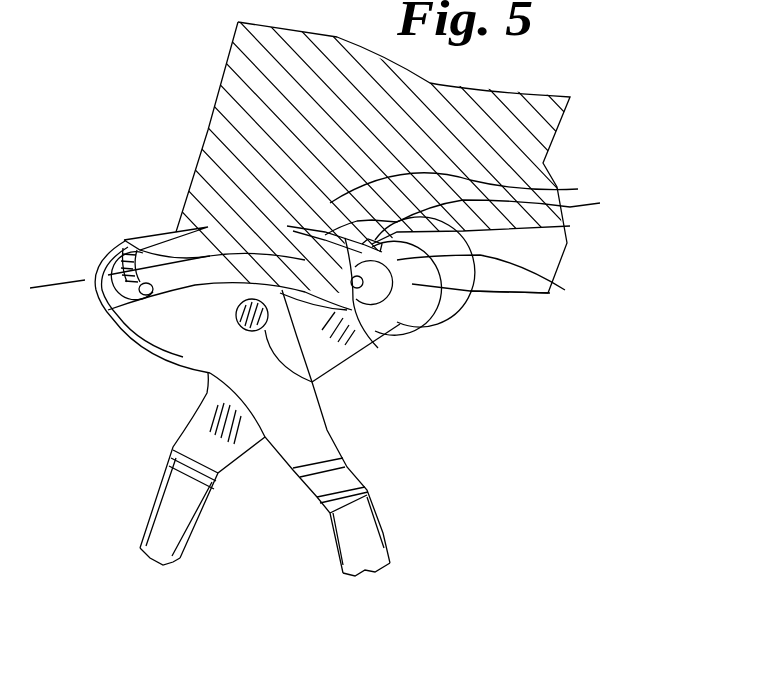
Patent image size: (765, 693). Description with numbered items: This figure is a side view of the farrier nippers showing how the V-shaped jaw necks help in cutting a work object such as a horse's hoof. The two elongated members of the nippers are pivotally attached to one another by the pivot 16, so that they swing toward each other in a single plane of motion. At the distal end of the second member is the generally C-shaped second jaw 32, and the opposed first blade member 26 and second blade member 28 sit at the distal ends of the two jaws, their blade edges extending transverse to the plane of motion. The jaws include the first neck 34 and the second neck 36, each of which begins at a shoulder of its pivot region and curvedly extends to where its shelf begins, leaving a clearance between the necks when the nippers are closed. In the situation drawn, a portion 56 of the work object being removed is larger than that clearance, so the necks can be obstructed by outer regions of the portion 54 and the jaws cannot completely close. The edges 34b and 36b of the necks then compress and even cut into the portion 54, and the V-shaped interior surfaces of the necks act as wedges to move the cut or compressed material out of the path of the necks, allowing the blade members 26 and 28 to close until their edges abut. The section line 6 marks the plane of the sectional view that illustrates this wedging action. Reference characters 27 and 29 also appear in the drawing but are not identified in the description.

The section line 6 is at (59, 296).
The pivot 16 is at (313, 380).
The first blade member 26 is at (182, 228).
The blade surface 27 is at (125, 239).
The second blade member 28 is at (471, 187).
The ridge 29 is at (600, 203).
The second jaw 32 is at (398, 322).
The first neck 34 is at (116, 240).
The edge of first neck 34b is at (147, 297).
The second neck 36 is at (565, 290).
The edge of second neck 36b is at (352, 318).
The portion of work object 54 is at (570, 226).
The portion of work object 56 is at (201, 104).